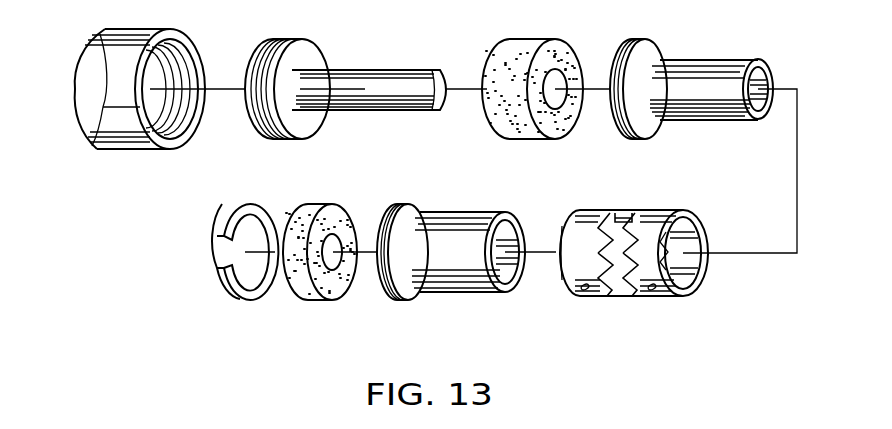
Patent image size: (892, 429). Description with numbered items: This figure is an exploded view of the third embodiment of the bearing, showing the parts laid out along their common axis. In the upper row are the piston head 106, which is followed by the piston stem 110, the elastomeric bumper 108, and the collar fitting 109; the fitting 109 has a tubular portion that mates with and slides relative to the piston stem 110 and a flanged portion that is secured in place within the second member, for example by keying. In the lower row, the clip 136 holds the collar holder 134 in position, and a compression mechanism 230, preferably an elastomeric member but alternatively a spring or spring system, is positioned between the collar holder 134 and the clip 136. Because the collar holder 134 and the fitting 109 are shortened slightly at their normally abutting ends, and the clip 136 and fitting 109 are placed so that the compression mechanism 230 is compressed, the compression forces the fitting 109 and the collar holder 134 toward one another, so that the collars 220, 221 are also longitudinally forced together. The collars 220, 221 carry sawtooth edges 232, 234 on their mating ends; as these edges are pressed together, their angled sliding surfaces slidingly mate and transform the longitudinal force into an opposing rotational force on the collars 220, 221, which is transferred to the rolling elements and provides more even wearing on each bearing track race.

The piston head 106 is at (284, 40).
The piston stem 110 is at (366, 71).
The elastomeric bumper 108 is at (528, 42).
The collar fitting 109 is at (693, 61).
The clip 136 is at (246, 303).
The compression mechanism 230 is at (318, 302).
The collar holder 134 is at (467, 293).
The collar 220 is at (644, 264).
The collar 221 is at (570, 263).
The sawtooth edge 234 is at (626, 207).
The sawtooth edge 232 is at (632, 300).